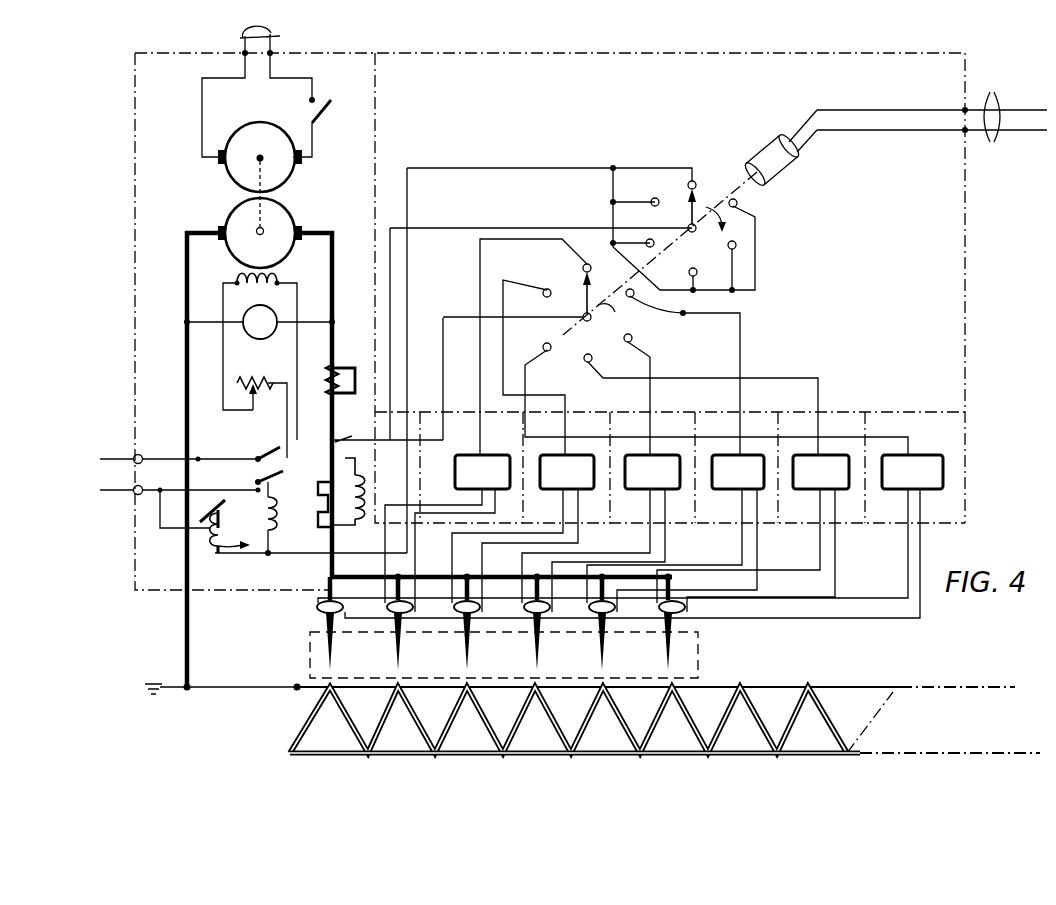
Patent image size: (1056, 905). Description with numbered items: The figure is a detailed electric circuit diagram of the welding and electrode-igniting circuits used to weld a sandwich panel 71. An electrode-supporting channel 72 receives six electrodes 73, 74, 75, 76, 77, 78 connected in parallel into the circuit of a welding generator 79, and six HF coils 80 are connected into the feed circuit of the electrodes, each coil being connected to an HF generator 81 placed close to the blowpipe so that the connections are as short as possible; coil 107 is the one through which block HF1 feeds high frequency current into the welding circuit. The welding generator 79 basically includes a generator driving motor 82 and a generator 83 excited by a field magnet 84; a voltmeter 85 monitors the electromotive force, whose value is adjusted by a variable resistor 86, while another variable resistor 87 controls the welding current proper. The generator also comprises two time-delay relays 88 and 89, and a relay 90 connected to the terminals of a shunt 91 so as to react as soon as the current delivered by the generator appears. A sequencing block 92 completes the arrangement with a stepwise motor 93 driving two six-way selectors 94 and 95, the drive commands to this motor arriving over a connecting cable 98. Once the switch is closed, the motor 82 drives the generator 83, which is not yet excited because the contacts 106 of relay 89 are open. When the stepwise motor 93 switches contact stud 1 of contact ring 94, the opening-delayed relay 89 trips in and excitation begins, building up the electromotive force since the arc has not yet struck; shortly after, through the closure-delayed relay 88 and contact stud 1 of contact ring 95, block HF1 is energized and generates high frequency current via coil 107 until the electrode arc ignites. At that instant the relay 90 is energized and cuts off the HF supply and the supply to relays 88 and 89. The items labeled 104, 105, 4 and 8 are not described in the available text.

The welding generator 79 is at (135, 165).
The generator driving motor 82 is at (279, 128).
The generator 83 is at (288, 214).
The field magnet 84 is at (280, 281).
The voltmeter 85 is at (276, 336).
The variable resistor 86 is at (256, 375).
The variable resistor 87 is at (333, 372).
The time-delay relay 88 is at (212, 550).
The time-delay relay 89 is at (276, 513).
The relay 90 is at (362, 491).
The shunt 91 is at (316, 527).
The sequencing block 92 is at (975, 236).
The stepwise motor 93 is at (780, 167).
The six-way selector 94 is at (738, 250).
The six-way selector 95 is at (700, 326).
The connecting cable 98 is at (991, 106).
The HF generator 81 is at (946, 482).
The HF coils 80 is at (688, 608).
The electrode carrier 104 is at (298, 638).
The electrode carrier 105 is at (705, 637).
The contacts of relay 89 106 is at (272, 444).
The coil 107 is at (318, 608).
The electrode-supporting channel 72 is at (308, 650).
The electrode 73 is at (343, 645).
The electrode 74 is at (549, 645).
The electrode 75 is at (411, 645).
The electrode 76 is at (615, 645).
The electrode 77 is at (480, 645).
The electrode 78 is at (682, 645).
The contact stud 1 is at (830, 712).
The upper chord 4 is at (743, 687).
The node 8 is at (783, 687).
The sandwich panel 71 is at (815, 752).